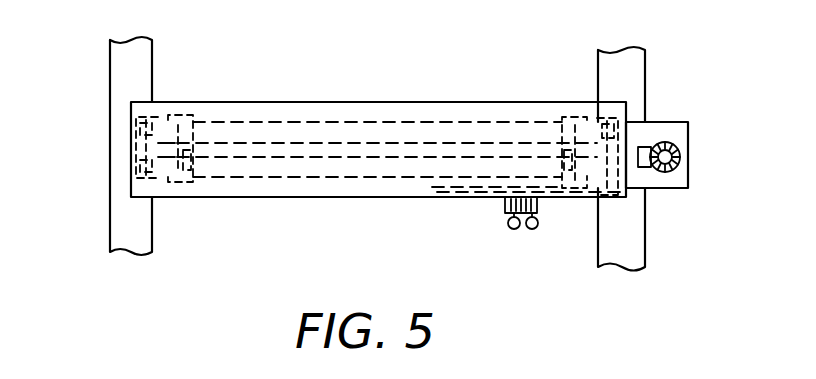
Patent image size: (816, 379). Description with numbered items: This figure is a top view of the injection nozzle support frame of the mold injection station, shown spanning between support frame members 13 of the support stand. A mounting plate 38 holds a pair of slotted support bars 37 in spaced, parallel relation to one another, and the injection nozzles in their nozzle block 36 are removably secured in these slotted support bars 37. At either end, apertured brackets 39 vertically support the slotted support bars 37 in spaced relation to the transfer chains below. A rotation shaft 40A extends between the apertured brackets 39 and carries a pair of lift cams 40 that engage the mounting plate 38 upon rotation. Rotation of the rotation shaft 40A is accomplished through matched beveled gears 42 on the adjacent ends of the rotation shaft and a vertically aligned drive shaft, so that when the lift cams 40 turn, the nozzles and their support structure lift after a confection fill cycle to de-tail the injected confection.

The support frame members 13 is at (638, 61).
The nozzle block 36 is at (540, 210).
The slotted support bars 37 is at (255, 113).
The mounting plate 38 is at (435, 103).
The apertured brackets 39 is at (135, 148).
The lift cams 40 is at (183, 113).
The rotation shaft 40A is at (338, 145).
The beveled gears 42 is at (662, 143).